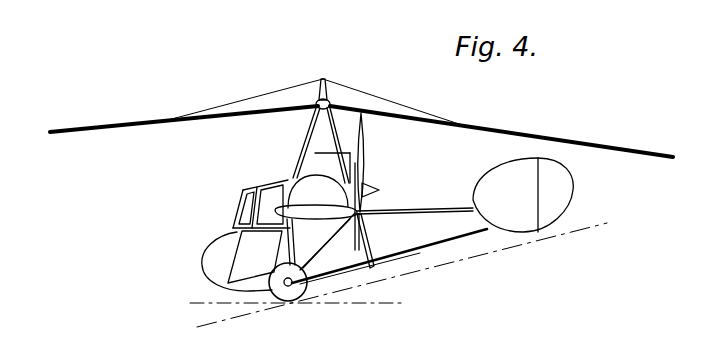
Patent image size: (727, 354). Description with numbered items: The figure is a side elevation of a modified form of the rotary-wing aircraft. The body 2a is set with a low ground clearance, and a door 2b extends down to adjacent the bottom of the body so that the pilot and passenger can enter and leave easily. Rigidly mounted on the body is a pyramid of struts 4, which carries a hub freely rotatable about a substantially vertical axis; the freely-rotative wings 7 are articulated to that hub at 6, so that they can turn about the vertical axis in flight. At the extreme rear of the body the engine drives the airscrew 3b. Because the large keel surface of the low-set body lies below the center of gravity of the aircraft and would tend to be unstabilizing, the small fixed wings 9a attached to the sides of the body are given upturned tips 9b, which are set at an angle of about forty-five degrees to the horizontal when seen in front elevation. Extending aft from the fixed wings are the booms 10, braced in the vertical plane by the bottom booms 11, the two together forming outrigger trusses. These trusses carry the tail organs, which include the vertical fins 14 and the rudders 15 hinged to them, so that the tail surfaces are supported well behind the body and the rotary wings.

The body 2a is at (252, 285).
The door 2b is at (259, 231).
The airscrew 3b is at (368, 150).
The pyramid of struts 4 is at (310, 131).
The articulation of the wings to the hub 6 is at (331, 101).
The freely-rotative wings 7 is at (361, 118).
The fixed wings 9a is at (302, 224).
The upturned tips 9b is at (316, 197).
The booms 10 is at (443, 204).
The bottom booms 11 is at (421, 239).
The vertical fins 14 is at (523, 195).
The rudders 15 is at (555, 195).